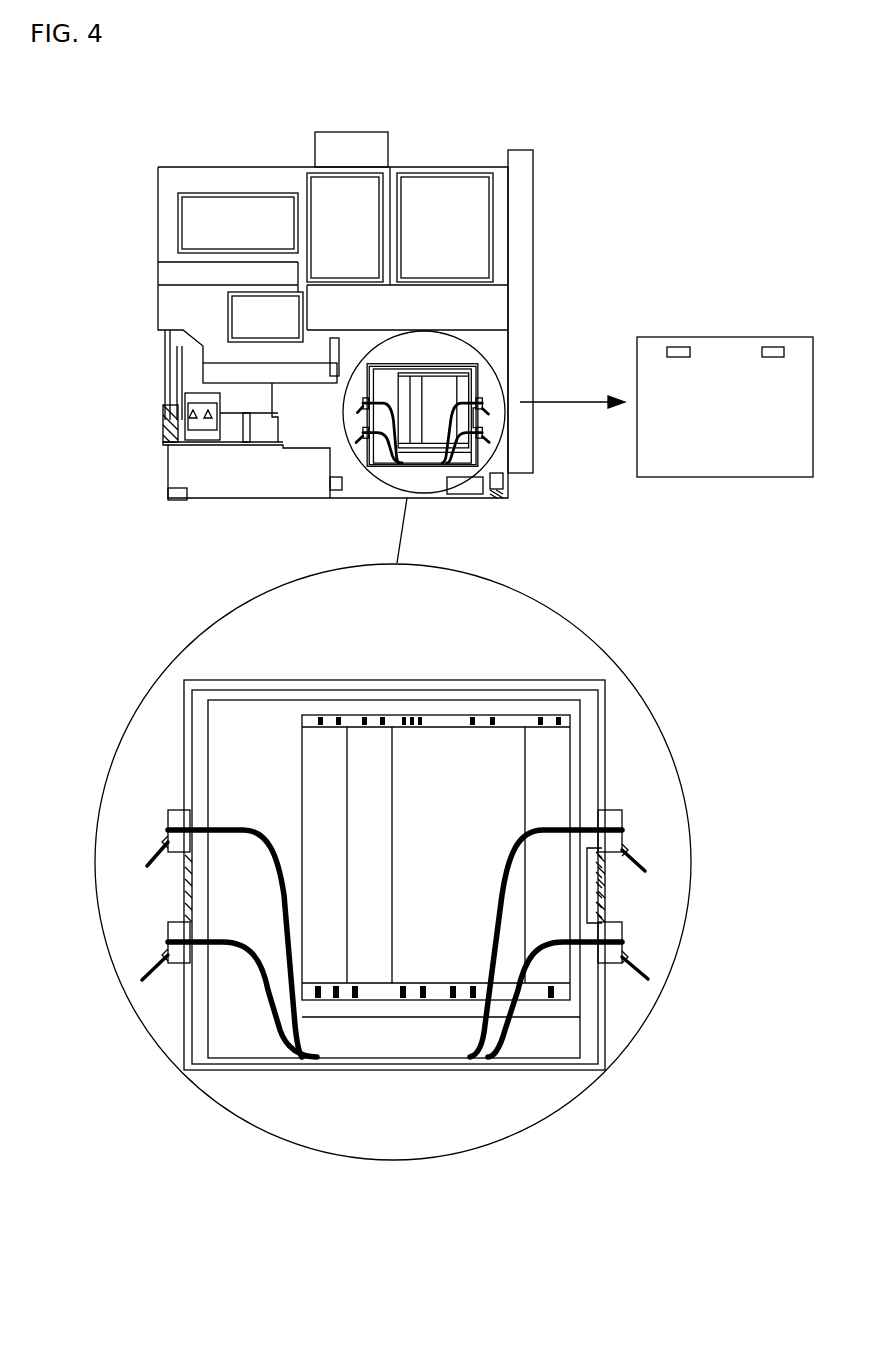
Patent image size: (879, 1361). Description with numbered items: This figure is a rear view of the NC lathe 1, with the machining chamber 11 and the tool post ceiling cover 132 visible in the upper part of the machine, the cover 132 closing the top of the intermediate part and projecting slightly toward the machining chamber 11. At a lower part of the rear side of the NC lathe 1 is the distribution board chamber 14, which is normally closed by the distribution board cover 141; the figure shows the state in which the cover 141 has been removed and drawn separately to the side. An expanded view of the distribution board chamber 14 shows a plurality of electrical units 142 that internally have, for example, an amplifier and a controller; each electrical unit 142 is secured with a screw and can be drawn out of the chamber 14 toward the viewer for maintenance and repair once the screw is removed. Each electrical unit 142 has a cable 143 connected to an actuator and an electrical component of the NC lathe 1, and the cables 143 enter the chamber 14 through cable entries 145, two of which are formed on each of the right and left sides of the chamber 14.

The NC lathe 1 is at (572, 241).
The machining chamber 11 is at (227, 172).
The tool post ceiling cover 132 is at (315, 140).
The distribution board chamber 14 is at (478, 383).
The distribution board cover 141 is at (720, 340).
The electrical unit 142 is at (318, 733).
The cable 143 is at (624, 834).
The cable entry 145 is at (613, 808).